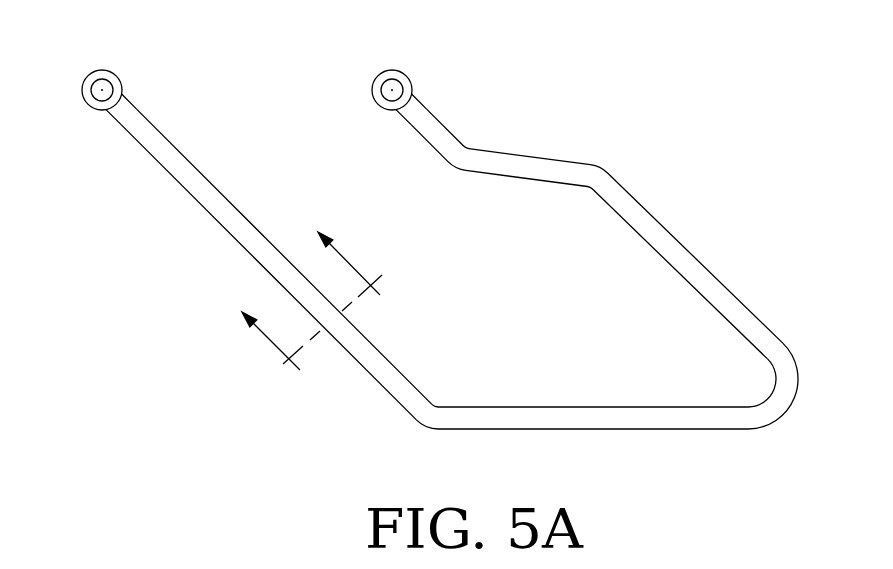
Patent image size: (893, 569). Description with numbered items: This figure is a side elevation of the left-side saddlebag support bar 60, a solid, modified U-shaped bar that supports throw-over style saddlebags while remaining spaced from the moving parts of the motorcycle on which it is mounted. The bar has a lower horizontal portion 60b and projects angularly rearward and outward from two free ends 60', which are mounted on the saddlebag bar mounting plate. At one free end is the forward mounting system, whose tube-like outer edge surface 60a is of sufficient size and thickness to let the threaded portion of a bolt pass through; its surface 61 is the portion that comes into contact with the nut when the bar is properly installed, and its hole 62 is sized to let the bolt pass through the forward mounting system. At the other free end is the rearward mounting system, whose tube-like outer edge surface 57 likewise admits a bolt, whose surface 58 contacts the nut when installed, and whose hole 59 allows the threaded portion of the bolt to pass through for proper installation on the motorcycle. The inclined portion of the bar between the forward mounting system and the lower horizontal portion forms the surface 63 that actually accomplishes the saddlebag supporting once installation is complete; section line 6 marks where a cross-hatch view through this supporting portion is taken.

The left-side saddlebag support bar 60 is at (452, 264).
The outer edge surface of the forward mounting system 60a is at (92, 72).
The lower horizontal portion 60b is at (677, 425).
The free ends 60' is at (257, 97).
The forward mounting system nut-contact surface 61 is at (117, 88).
The hole of forward mounting system 62 is at (100, 90).
The outer edge surface of the rearward mounting system 57 is at (392, 72).
The rearward mounting system nut-contact surface 58 is at (407, 88).
The hole of rearward mounting system 59 is at (390, 92).
The saddlebag supporting surface 63 is at (228, 215).
The section line 6- 6 is at (321, 314).